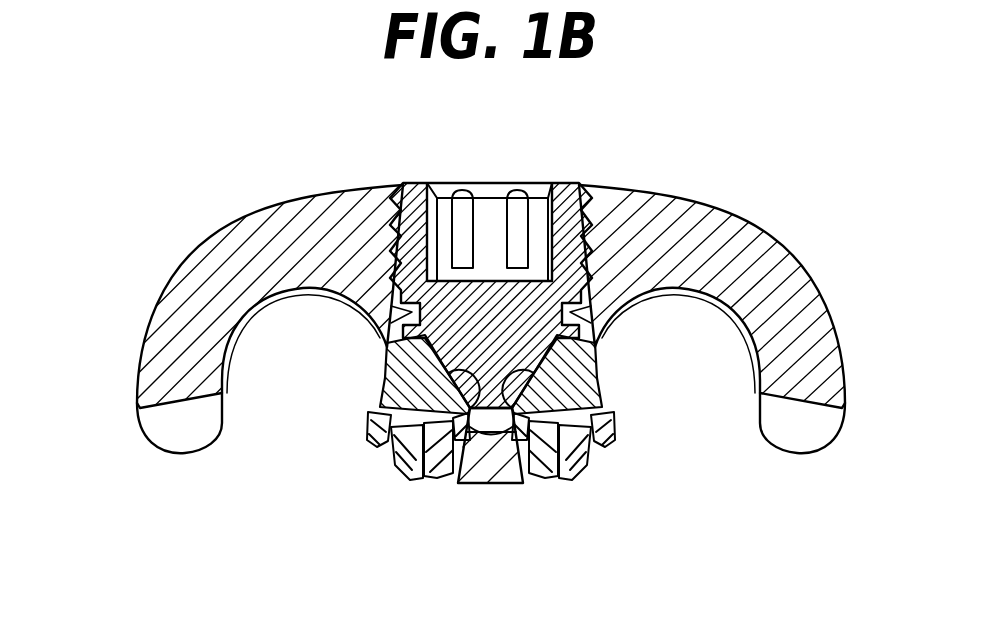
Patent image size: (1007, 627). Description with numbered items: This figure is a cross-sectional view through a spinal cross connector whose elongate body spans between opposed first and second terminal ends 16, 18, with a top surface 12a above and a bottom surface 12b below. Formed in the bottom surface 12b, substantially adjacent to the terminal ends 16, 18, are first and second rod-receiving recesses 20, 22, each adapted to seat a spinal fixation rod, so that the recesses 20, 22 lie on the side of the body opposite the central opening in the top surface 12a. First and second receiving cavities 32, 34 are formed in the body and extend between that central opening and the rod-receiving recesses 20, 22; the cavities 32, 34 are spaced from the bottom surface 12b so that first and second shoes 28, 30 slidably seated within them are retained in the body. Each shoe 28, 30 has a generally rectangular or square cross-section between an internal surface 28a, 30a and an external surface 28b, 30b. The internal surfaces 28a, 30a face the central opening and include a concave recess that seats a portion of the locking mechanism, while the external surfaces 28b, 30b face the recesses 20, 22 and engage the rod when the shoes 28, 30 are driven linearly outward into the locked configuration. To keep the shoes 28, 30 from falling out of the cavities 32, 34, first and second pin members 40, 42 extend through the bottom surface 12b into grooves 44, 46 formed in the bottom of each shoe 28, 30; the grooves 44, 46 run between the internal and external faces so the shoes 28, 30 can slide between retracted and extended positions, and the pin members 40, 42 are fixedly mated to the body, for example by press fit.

The top surface 12a is at (612, 188).
The bottom surface 12b is at (492, 488).
The first terminal end 16 is at (108, 372).
The second terminal end 18 is at (872, 400).
The first rod-receiving recess 20 is at (262, 433).
The second rod-receiving recess 22 is at (724, 440).
The first shoe 28 is at (377, 485).
The internal surface of first shoe 28a is at (462, 484).
The external surface of first shoe 28b is at (368, 405).
The second shoe 30 is at (621, 473).
The internal surface of second shoe 30a is at (513, 433).
The external surface of second shoe 30b is at (608, 400).
The first receiving cavity 32 is at (380, 352).
The second receiving cavity 34 is at (603, 357).
The first pin member 40 is at (430, 470).
The second pin member 42 is at (545, 468).
The groove of first shoe 44 is at (390, 443).
The groove of second shoe 46 is at (592, 440).